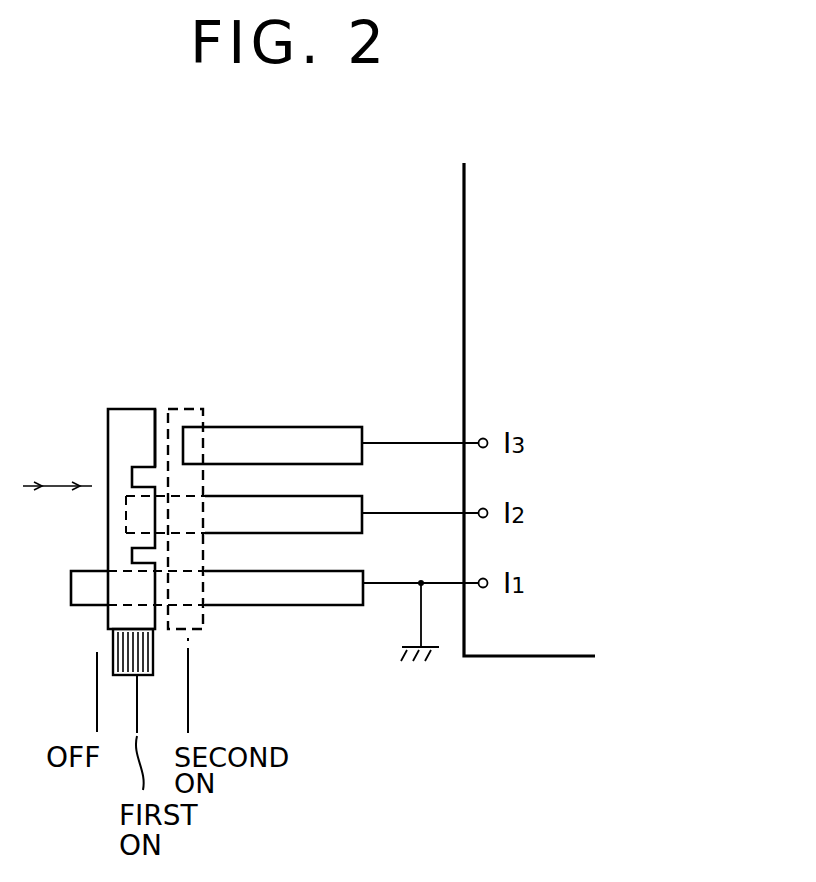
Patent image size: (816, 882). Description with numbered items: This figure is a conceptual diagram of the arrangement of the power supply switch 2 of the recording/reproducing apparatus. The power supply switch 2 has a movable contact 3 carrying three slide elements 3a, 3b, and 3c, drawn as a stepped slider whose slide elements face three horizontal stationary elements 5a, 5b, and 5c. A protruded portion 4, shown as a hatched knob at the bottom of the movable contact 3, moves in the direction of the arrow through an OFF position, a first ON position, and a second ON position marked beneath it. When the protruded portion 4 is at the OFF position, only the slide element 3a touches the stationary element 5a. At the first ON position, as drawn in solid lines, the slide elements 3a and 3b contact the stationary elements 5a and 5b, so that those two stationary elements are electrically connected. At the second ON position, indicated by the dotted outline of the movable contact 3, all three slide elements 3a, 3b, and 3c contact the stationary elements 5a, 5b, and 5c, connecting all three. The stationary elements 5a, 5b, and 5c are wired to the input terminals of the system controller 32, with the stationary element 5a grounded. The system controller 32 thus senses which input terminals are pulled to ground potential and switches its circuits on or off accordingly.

The power supply switch 2 is at (152, 375).
The movable contact 3 is at (108, 440).
The slide element 3a is at (143, 586).
The slide element 3b is at (145, 512).
The slide element 3c is at (148, 428).
The protruded portion 4 is at (113, 652).
The stationary element 5a is at (335, 590).
The stationary element 5b is at (352, 524).
The stationary element 5c is at (327, 435).
The system controller 32 is at (478, 218).